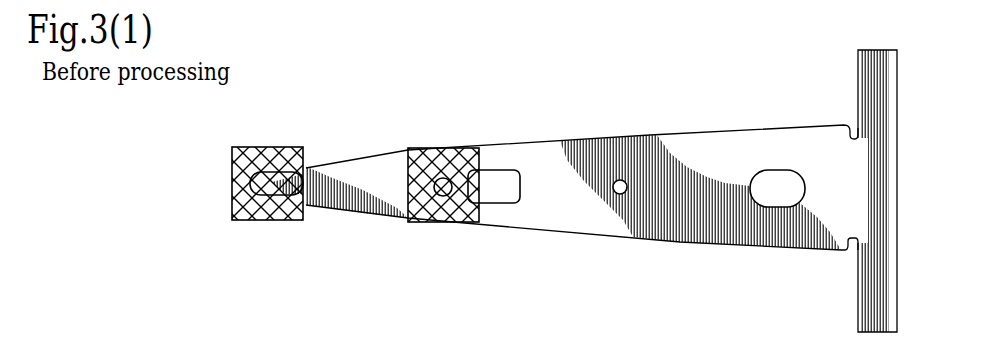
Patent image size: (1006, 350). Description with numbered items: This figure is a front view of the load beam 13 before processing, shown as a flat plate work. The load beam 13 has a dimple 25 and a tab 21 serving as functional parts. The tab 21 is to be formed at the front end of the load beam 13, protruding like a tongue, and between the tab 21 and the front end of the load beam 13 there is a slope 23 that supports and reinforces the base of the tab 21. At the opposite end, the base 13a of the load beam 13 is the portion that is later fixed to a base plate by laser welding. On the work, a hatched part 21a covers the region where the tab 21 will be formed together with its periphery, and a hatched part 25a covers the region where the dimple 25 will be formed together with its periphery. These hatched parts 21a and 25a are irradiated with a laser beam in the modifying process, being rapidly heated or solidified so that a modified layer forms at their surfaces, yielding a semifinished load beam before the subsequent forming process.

The load beam 13 is at (677, 82).
The base 13a is at (885, 78).
The tab 21 is at (252, 181).
The hatched part 21a is at (265, 147).
The slope 23 is at (327, 170).
The dimple 25 is at (442, 148).
The hatched part 25a is at (467, 148).